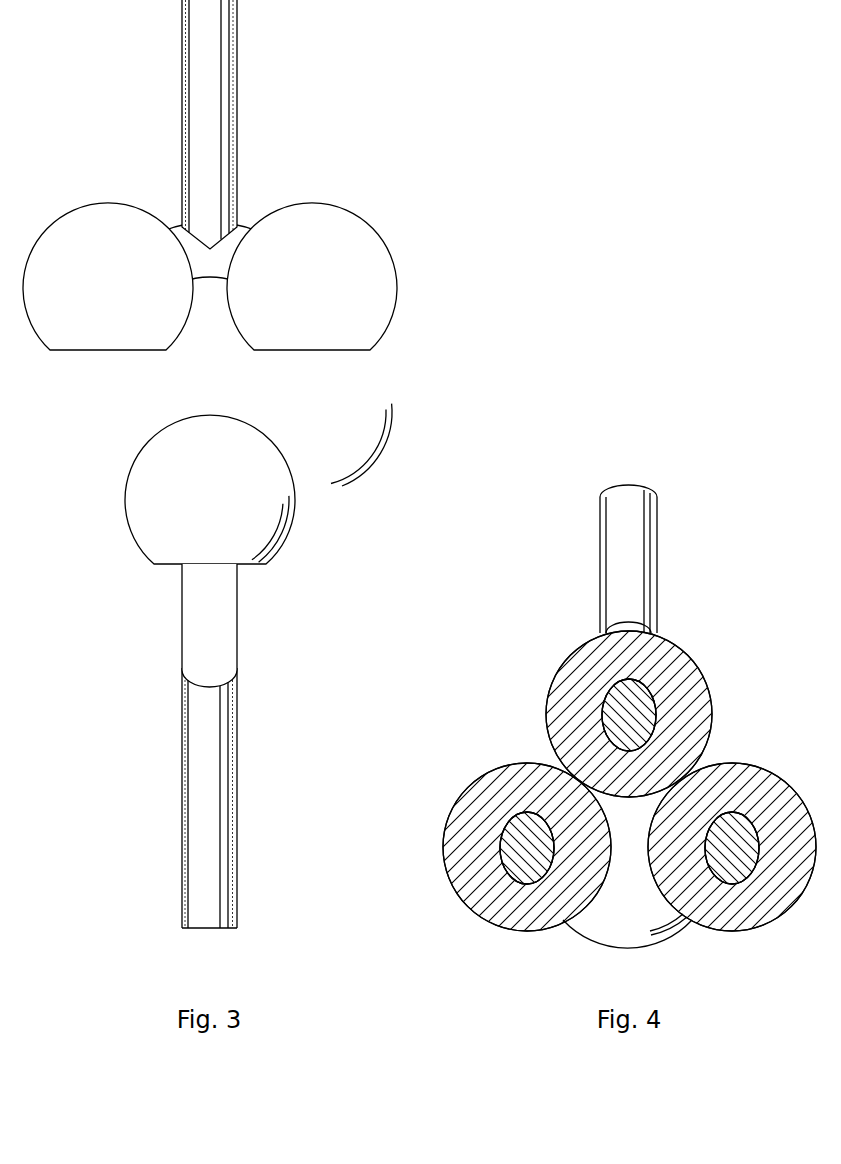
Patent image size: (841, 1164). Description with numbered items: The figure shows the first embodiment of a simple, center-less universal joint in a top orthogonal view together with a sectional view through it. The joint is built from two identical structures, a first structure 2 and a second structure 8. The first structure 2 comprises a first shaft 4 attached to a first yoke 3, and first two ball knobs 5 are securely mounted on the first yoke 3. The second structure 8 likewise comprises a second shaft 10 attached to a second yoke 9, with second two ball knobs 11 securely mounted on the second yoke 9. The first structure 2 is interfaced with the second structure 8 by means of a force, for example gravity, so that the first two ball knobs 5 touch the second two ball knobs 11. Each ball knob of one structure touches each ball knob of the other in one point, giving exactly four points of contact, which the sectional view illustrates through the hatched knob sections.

In FIG. 3, the first structure 2 is at (226, 464).
In FIG. 3, the first yoke 3 is at (200, 630).
In FIG. 4, the first yoke 3 is at (519, 861).
In FIG. 3, the first shaft 4 is at (195, 818).
In FIG. 3, the first two ball knobs 5 is at (199, 506).
In FIG. 4, the first two ball knobs 5 is at (519, 806).
In FIG. 3, the second structure 8 is at (251, 464).
In FIG. 3, the second yoke 9 is at (244, 278).
In FIG. 4, the second yoke 9 is at (621, 730).
In FIG. 3, the second shaft 10 is at (189, 91).
In FIG. 4, the second shaft 10 is at (613, 540).
In FIG. 3, the second two ball knobs 11 is at (85, 431).
In FIG. 4, the second two ball knobs 11 is at (614, 672).